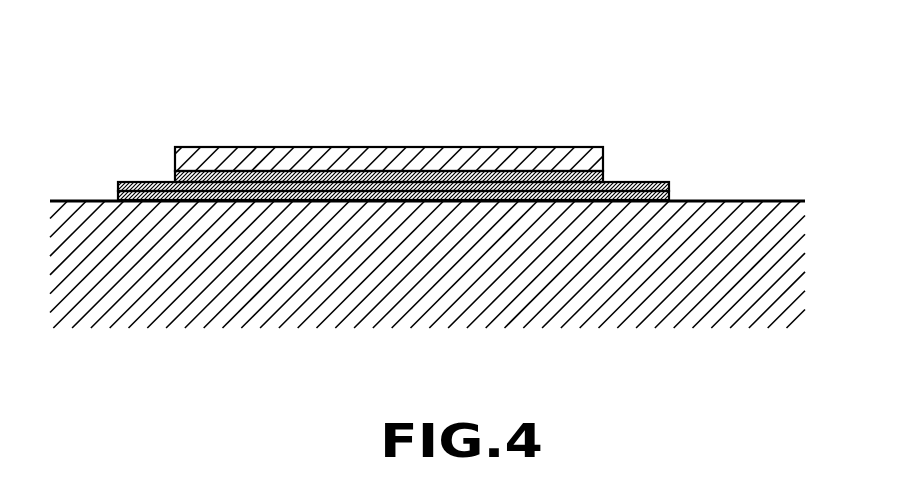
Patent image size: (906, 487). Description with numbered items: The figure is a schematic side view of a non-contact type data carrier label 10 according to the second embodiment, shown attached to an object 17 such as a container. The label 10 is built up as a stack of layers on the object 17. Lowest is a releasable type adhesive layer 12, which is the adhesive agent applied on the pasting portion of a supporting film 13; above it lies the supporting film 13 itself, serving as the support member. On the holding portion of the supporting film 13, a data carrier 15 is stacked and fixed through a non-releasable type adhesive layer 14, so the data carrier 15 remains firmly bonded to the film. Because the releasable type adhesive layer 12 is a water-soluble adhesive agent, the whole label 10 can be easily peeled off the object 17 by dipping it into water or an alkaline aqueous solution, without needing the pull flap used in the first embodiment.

The non-contact type data carrier label 10 is at (534, 97).
The releasable type adhesive layer 12 is at (118, 196).
The supporting film 13 is at (130, 181).
The non-releasable type adhesive layer 14 is at (240, 176).
The data carrier 15 is at (400, 160).
The object 17 is at (777, 260).